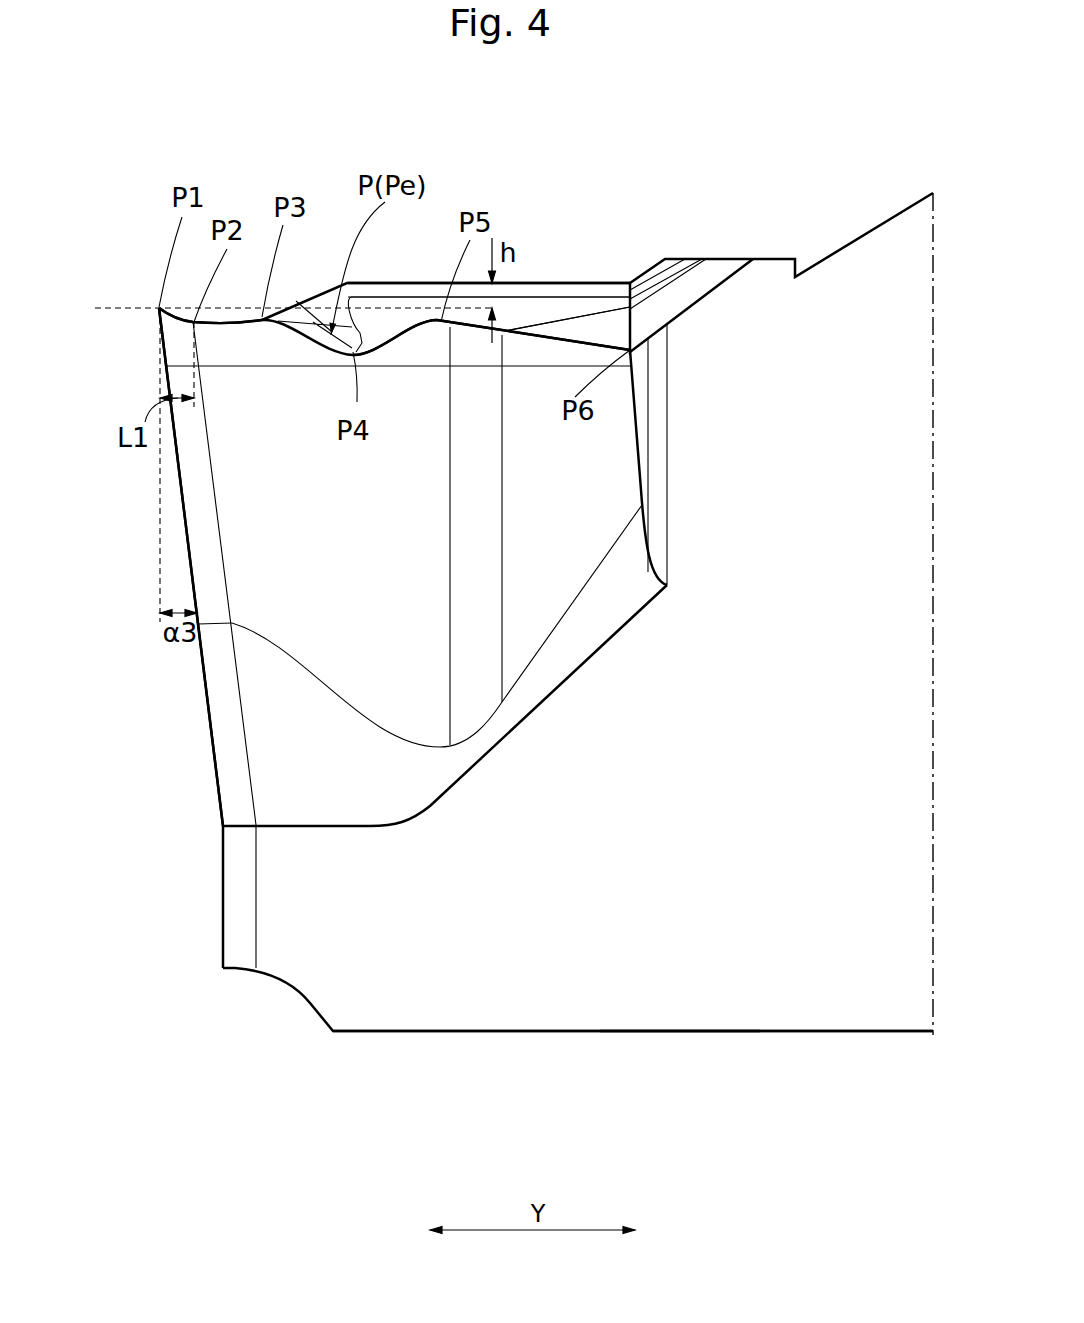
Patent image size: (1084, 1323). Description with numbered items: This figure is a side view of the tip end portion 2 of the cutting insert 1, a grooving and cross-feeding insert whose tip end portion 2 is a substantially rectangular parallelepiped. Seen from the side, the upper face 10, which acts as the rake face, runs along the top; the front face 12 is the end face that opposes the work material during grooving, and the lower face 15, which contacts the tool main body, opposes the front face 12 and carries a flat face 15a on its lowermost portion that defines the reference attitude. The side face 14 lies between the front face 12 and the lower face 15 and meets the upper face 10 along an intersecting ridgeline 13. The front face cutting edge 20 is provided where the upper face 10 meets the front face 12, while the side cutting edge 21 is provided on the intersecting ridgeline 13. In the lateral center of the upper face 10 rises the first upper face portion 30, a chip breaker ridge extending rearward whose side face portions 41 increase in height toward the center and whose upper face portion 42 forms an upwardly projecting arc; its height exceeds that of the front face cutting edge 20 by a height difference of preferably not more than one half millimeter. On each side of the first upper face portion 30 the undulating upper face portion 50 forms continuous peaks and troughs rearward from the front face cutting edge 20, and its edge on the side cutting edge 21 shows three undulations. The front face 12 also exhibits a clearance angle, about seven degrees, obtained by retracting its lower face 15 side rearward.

The cutting insert 1 is at (648, 138).
The tip end portion 2 is at (583, 187).
The upper face 10 is at (408, 328).
The front face 12 is at (180, 512).
The intersecting ridgeline 13 is at (600, 293).
The side face 14 is at (323, 613).
The lower face 15 is at (583, 1031).
The flat face 15a is at (663, 1031).
The front face cutting edge 20 is at (158, 305).
The side cutting edge 21 is at (507, 328).
The first upper face portion 30 is at (522, 283).
The side face portion 41 is at (387, 300).
The upper face portion 42 is at (535, 333).
The undulating upper face portion 50 is at (304, 336).